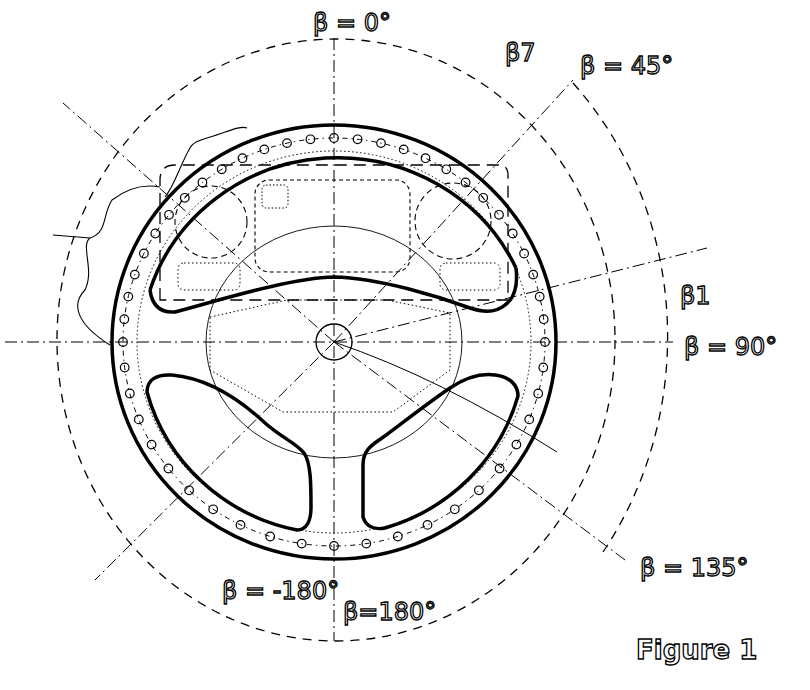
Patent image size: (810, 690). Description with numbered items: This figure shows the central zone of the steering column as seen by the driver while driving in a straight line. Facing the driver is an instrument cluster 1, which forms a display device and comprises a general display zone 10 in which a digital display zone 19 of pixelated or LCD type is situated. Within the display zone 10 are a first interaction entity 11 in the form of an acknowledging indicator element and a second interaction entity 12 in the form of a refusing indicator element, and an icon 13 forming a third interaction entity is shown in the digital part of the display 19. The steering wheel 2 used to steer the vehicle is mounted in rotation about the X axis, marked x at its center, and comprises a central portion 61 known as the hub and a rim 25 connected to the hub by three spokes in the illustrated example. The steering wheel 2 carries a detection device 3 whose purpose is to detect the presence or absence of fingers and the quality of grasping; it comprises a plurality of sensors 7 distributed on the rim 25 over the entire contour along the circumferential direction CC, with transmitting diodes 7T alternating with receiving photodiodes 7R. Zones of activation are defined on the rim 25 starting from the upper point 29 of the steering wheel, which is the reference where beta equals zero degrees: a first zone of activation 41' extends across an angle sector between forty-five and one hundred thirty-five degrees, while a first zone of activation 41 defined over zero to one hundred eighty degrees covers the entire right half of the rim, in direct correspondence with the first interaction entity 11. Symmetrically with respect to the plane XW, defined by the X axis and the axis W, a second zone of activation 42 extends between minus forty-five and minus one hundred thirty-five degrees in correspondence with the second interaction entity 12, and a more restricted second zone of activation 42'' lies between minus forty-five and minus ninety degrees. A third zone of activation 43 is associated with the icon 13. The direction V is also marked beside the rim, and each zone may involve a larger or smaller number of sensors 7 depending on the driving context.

The instrument cluster 1 is at (508, 164).
The steering wheel 2 is at (152, 487).
The detection device 3 is at (104, 384).
The sensors 7 is at (428, 160).
The receiving photodiode 7R is at (546, 316).
The transmitting diode 7T is at (545, 340).
The display zone 10 is at (508, 172).
The first interaction entity 11 is at (467, 262).
The second interaction entity 12 is at (197, 291).
The icon 13 is at (277, 186).
The digital display zone 19 is at (290, 180).
The rim 25 is at (193, 510).
The upper point 29 is at (335, 127).
The first zone of activation 41 is at (336, 320).
The first zone of activation 41' is at (645, 317).
The second zone of activation 42 is at (123, 101).
The second zone of activation 42'' is at (87, 265).
The third zone of activation 43 is at (190, 146).
The central portion 61 is at (461, 412).
The circumferential direction CC is at (463, 504).
The vehicle direction V is at (648, 330).
The W axis W is at (334, 80).
The X axis x is at (336, 343).